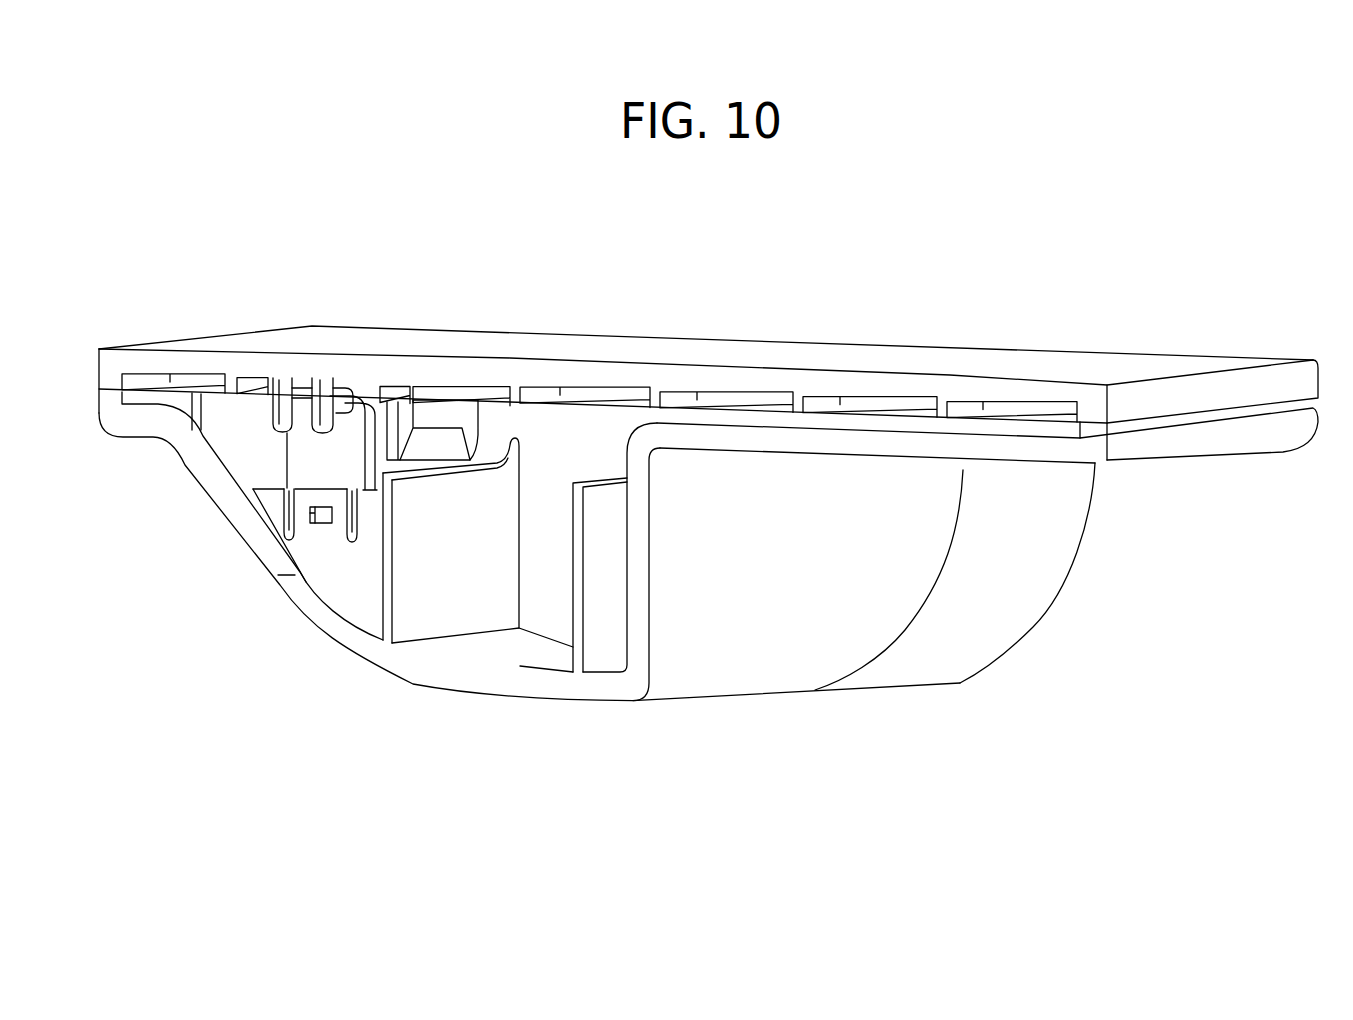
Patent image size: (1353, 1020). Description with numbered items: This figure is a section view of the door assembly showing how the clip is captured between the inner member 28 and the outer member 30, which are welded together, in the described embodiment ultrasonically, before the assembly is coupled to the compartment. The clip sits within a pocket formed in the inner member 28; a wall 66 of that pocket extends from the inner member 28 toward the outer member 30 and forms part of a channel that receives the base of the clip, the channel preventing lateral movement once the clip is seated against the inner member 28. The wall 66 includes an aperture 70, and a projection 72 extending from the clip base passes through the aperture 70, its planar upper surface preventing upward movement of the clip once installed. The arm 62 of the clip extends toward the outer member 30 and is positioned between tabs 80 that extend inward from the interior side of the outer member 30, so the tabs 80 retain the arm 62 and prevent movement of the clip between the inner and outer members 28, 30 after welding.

The outer member 30 is at (1187, 353).
The inner member 28 is at (1178, 458).
The wall 66 is at (335, 600).
The tabs 80 is at (275, 403).
The arm 62 is at (285, 460).
The aperture 70 is at (310, 513).
The projection 72 is at (320, 524).